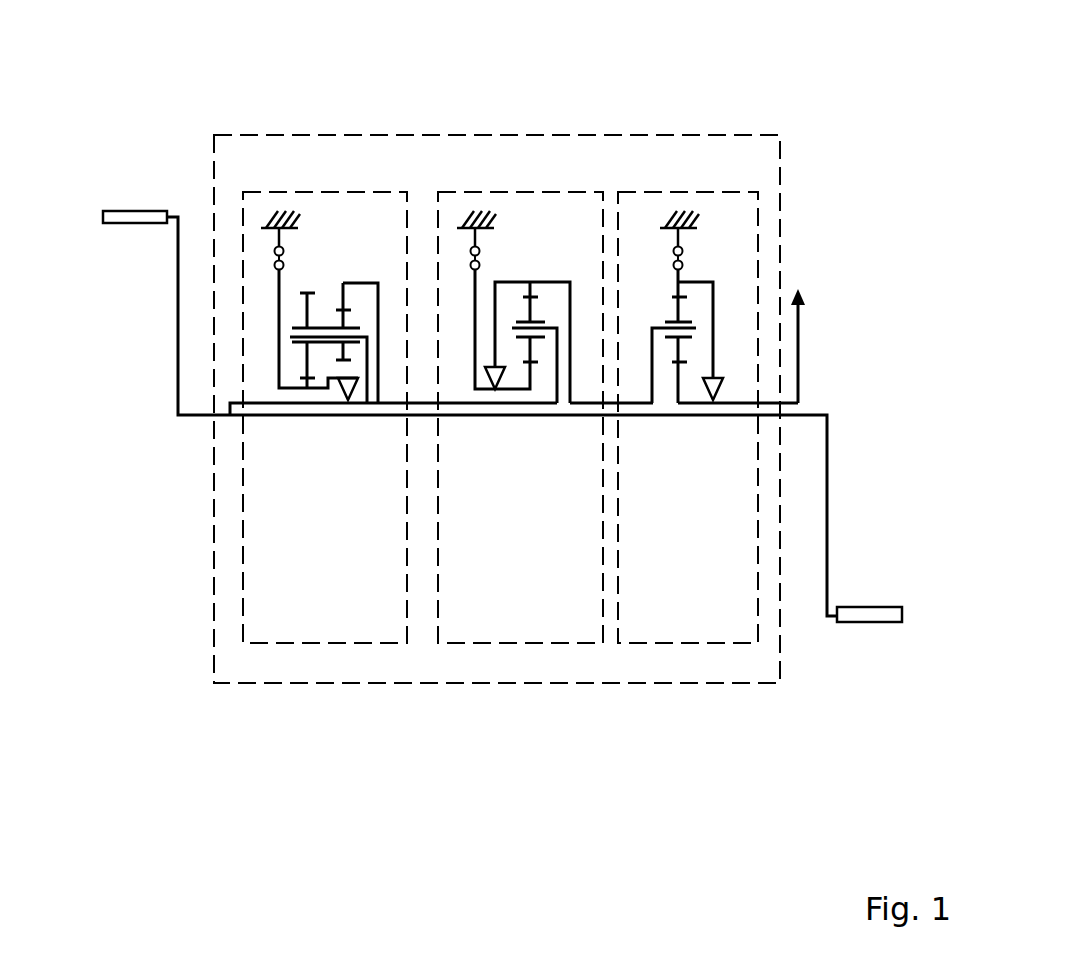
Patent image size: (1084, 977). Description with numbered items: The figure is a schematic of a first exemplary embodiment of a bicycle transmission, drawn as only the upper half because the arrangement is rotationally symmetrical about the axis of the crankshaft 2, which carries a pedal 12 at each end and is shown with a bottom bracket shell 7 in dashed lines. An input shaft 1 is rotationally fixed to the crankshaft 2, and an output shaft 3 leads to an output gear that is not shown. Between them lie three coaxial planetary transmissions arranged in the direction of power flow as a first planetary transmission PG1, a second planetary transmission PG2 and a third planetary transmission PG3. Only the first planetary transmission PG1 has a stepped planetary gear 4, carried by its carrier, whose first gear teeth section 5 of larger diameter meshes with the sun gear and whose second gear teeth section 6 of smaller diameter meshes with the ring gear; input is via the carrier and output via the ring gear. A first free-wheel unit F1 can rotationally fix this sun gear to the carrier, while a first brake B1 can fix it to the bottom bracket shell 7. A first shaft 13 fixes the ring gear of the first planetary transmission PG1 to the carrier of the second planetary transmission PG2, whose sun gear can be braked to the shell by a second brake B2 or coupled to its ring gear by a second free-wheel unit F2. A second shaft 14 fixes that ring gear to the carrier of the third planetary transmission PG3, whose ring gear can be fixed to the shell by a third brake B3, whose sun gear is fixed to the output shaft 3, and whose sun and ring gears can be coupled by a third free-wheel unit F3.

The input shaft 1 is at (262, 402).
The crankshaft 2 is at (178, 386).
The output shaft 3 is at (799, 353).
The stepped planetary gear 4 is at (310, 365).
The first gear teeth section 5 is at (307, 313).
The second gear teeth section 6 is at (345, 318).
The bottom bracket shell 7 is at (264, 214).
The pedal 12 is at (133, 210).
The first shaft 13 is at (363, 282).
The second shaft 14 is at (549, 282).
The first brake B1 is at (272, 258).
The second brake B2 is at (484, 254).
The third brake B3 is at (686, 258).
The first free-wheel unit F1 is at (352, 401).
The second free-wheel unit F2 is at (490, 378).
The third free-wheel unit F3 is at (717, 392).
The first planetary transmission PG1 is at (325, 419).
The second planetary transmission PG2 is at (520, 418).
The third planetary transmission PG3 is at (688, 418).